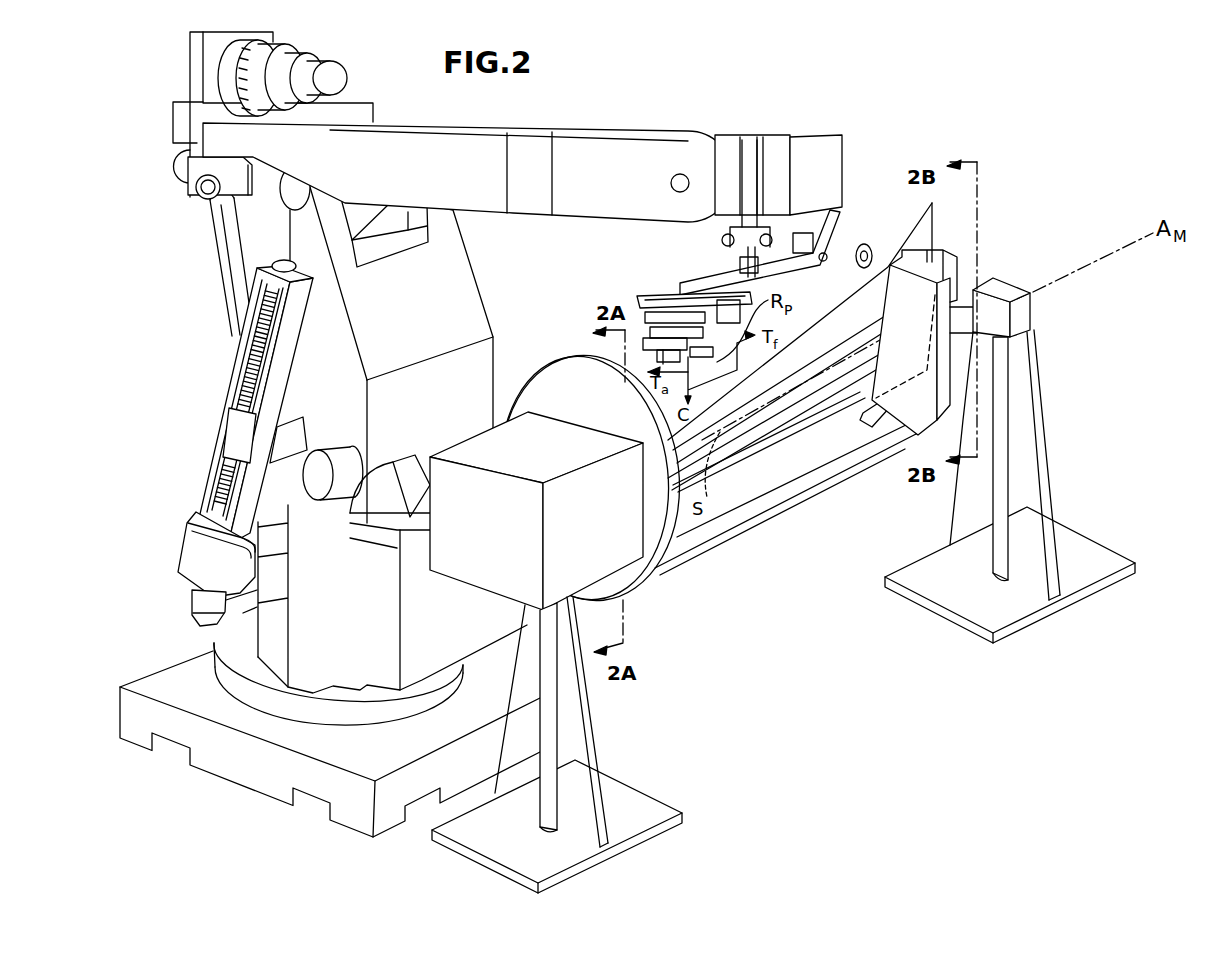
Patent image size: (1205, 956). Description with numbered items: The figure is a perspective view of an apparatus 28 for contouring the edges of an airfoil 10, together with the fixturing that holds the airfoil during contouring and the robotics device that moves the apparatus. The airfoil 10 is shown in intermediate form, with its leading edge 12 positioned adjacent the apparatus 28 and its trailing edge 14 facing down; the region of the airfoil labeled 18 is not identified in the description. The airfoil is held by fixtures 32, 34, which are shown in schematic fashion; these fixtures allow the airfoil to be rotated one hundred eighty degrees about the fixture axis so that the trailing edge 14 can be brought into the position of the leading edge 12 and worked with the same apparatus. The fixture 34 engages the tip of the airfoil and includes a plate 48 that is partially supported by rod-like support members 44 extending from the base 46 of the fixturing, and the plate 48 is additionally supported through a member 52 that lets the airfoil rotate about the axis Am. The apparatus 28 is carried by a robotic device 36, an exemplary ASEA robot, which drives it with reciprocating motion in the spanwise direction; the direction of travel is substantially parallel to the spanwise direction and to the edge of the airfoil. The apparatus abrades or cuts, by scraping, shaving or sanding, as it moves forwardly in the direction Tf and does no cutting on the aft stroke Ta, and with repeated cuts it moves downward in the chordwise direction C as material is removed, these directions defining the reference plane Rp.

The airfoil 10 is at (977, 217).
The leading edge 12 is at (850, 283).
The trailing edge 14 is at (770, 462).
The fixture spar 18 is at (868, 318).
The apparatus 28 is at (715, 307).
The fixture 32 is at (782, 534).
The fixture 34 is at (955, 330).
The robotic device 36 is at (778, 172).
The support members 44 is at (777, 423).
The base 46 is at (578, 360).
The plate 48 is at (900, 428).
The member 52 is at (971, 333).